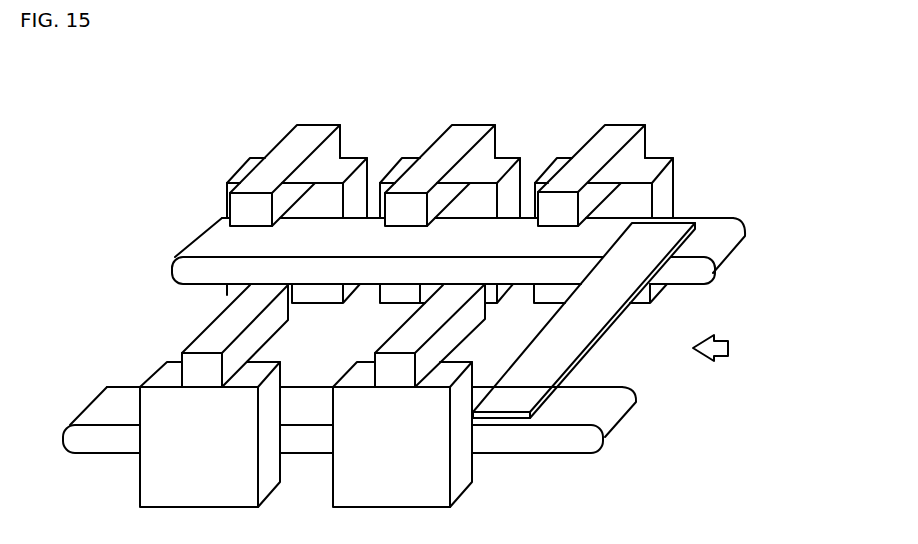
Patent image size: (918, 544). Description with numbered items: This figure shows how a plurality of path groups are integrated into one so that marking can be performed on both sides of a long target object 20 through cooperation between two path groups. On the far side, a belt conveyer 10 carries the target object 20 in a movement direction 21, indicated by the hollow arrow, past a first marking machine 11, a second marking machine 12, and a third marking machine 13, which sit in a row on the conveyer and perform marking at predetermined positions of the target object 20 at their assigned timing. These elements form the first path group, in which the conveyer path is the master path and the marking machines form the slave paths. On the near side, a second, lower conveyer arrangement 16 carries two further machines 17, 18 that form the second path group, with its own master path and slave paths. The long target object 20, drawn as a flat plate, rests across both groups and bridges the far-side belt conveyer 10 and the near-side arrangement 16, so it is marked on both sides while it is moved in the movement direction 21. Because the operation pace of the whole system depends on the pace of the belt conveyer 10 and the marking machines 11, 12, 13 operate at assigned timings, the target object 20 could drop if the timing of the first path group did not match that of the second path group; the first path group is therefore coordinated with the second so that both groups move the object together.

The belt conveyer 10 is at (193, 235).
The first marking machine 11 is at (613, 135).
The second marking machine 12 is at (468, 135).
The third marking machine 13 is at (310, 135).
The lower bar with boxes 16 is at (80, 407).
The second diagonal block on lower level 17 is at (405, 348).
The first diagonal block on lower level 18 is at (211, 342).
The target object 20 is at (603, 342).
The movement direction 21 is at (728, 348).